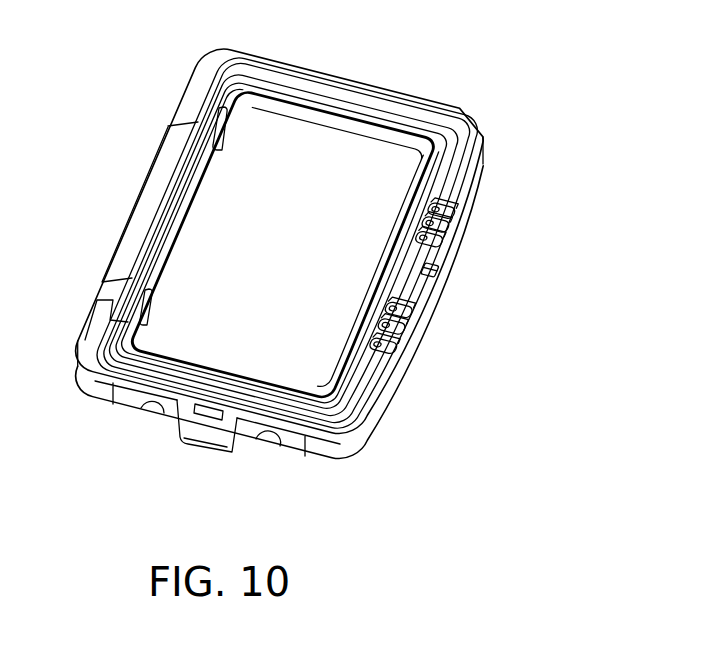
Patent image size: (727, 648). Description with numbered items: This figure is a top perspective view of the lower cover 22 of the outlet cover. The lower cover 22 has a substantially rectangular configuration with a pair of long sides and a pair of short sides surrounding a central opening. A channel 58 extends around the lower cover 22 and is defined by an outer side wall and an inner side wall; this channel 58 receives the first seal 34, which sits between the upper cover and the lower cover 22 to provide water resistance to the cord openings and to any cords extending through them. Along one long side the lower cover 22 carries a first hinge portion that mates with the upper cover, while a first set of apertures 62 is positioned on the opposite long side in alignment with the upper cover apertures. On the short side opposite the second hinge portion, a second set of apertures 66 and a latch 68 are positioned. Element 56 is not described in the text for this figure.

The lower cover 22 is at (546, 184).
The first seal 34 is at (239, 72).
The hinge knuckles 56 is at (407, 340).
The channel 58 is at (455, 117).
The first set of apertures 62 is at (190, 117).
The second set of apertures 66 is at (145, 405).
The latch 68 is at (212, 450).